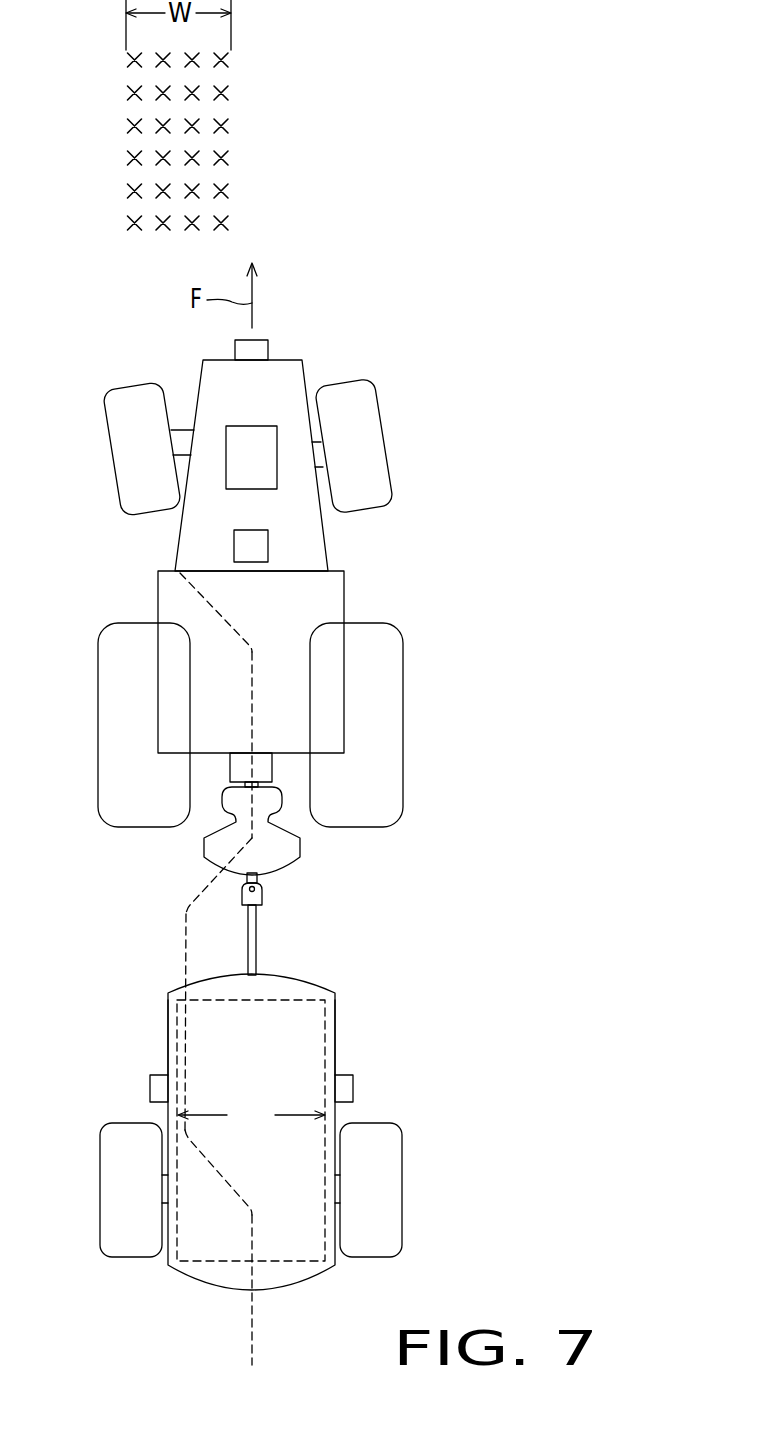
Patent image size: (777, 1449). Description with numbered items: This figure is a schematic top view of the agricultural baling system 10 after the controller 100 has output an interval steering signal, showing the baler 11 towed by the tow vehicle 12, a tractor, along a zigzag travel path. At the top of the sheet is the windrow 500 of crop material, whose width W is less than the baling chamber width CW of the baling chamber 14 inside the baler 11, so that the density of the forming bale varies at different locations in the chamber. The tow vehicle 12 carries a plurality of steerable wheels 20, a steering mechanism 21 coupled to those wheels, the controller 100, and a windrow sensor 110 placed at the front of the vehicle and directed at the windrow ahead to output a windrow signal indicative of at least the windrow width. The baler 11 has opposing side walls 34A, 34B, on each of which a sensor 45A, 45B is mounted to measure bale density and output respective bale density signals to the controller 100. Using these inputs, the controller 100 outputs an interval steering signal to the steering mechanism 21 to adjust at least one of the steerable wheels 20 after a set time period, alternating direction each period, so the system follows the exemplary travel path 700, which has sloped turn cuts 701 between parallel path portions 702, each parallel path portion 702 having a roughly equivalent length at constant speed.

The windrow 500 is at (254, 116).
The windrow sensor 110 is at (268, 340).
The steering mechanism 21 is at (252, 426).
The controller 100 is at (234, 547).
The steerable wheels 20 is at (108, 440).
The tow vehicle 12 is at (370, 584).
The agricultural baling system 10 is at (260, 637).
The sloped turn cuts 701 is at (227, 622).
The parallel path portions 702 is at (250, 703).
The travel path 700 is at (208, 969).
The baling chamber 14 is at (282, 998).
The baler 11 is at (252, 1102).
The side wall 34A is at (167, 1047).
The side wall 34B is at (337, 1050).
The first sensor 45A is at (150, 1088).
The second sensor 45B is at (353, 1088).